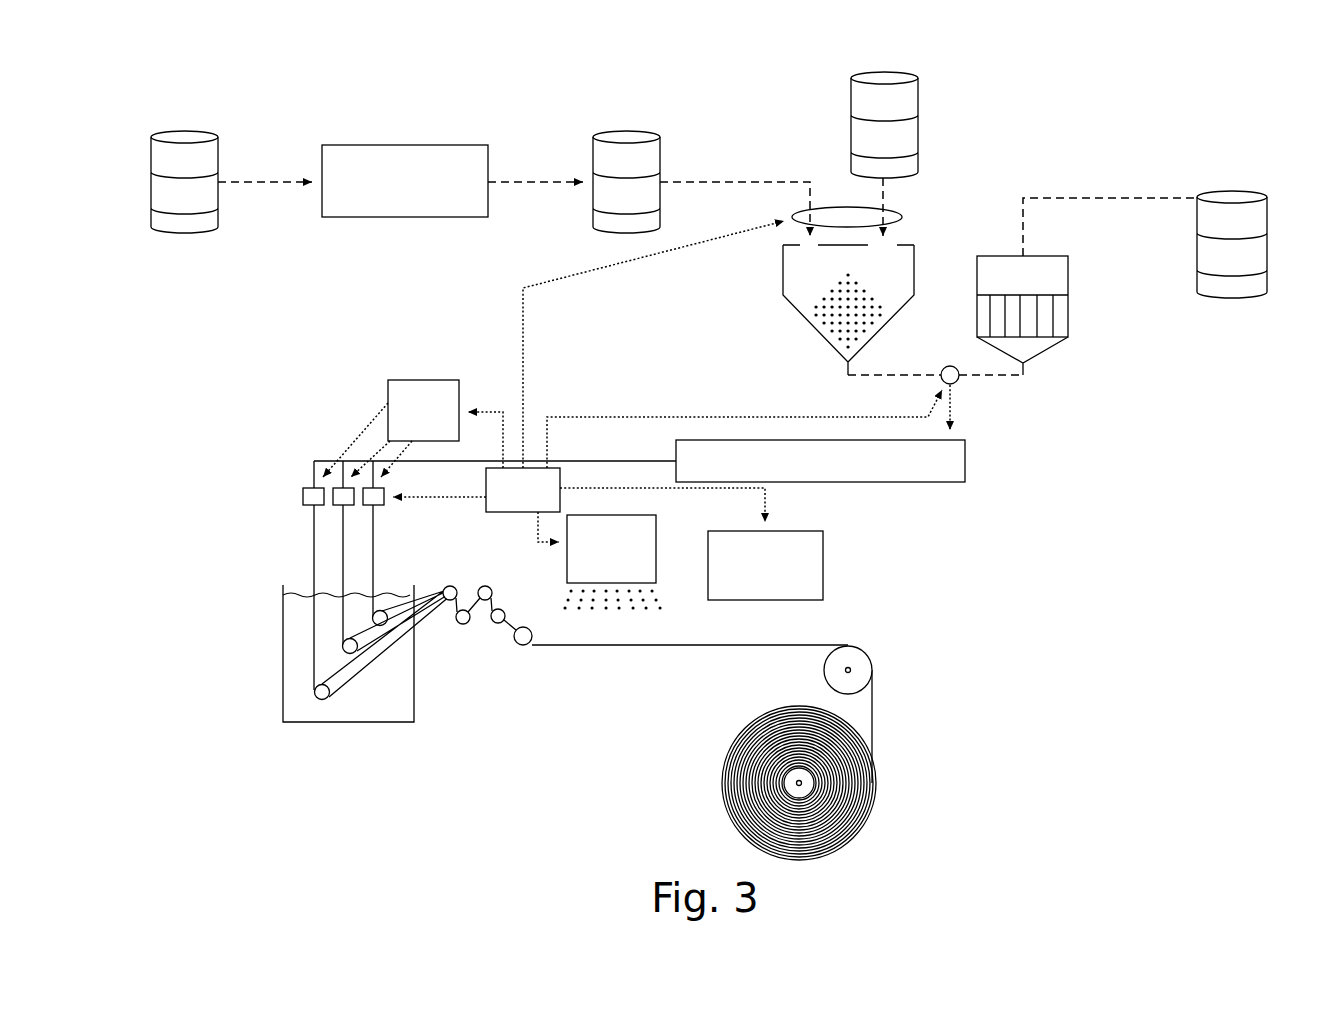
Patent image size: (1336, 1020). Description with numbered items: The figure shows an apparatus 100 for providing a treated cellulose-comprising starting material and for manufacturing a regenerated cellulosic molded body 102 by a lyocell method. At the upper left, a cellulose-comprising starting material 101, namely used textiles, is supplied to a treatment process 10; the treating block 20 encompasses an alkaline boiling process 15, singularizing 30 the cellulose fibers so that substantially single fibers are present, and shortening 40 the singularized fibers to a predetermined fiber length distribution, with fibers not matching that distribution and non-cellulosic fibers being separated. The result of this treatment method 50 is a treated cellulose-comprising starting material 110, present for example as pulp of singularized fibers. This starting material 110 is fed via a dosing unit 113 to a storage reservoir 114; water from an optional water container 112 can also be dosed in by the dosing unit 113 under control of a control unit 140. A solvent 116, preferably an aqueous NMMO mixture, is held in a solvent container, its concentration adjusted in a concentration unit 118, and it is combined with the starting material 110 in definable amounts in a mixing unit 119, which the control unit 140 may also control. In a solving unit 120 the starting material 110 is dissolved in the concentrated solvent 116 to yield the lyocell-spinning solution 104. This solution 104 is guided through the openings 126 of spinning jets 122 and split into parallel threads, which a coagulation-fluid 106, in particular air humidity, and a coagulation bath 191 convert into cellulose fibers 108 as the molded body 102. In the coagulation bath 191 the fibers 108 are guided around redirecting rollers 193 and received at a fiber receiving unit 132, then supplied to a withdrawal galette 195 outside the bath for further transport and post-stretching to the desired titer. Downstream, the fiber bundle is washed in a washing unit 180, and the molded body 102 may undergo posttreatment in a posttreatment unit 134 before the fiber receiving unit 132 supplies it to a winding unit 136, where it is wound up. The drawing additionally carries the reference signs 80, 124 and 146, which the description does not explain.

The treatment process 10 is at (278, 222).
The boiling process 15 is at (332, 143).
The treating 20 is at (400, 181).
The singularizing 30 is at (376, 143).
The shortening 40 is at (419, 143).
The treatment method 50 is at (478, 82).
The material preparation system 80 is at (1143, 105).
The apparatus 100 is at (1085, 627).
The cellulose-comprising starting material 101 is at (185, 135).
The molded body 102 is at (748, 783).
The lyocell-spinning solution 104 is at (583, 461).
The coagulation-fluid 106 is at (290, 650).
The cellulose fibers 108 is at (828, 645).
The treated cellulose-comprising starting material 110 is at (622, 135).
The water container 112 is at (908, 100).
The dosing unit 113 is at (832, 205).
The storage reservoir 114 is at (914, 243).
The solvent 116 is at (1237, 194).
The concentration unit 118 is at (1068, 280).
The mixing unit 119 is at (960, 380).
The solving unit 120 is at (965, 458).
The jets 122 is at (316, 483).
The supply unit 124 is at (271, 540).
The openings 126 is at (412, 530).
The fiber receiving unit 132 is at (428, 750).
The posttreatment unit 134 is at (765, 565).
The winding unit 136 is at (782, 787).
The control unit 140 is at (667, 381).
The valve controller 146 is at (391, 428).
The washing unit 180 is at (612, 561).
The coagulation bath 191 is at (292, 653).
The redirecting roller 193 is at (385, 624).
The withdrawal galette 195 is at (497, 580).